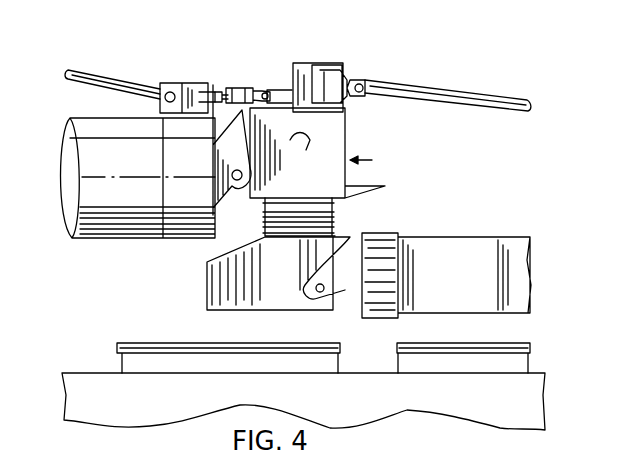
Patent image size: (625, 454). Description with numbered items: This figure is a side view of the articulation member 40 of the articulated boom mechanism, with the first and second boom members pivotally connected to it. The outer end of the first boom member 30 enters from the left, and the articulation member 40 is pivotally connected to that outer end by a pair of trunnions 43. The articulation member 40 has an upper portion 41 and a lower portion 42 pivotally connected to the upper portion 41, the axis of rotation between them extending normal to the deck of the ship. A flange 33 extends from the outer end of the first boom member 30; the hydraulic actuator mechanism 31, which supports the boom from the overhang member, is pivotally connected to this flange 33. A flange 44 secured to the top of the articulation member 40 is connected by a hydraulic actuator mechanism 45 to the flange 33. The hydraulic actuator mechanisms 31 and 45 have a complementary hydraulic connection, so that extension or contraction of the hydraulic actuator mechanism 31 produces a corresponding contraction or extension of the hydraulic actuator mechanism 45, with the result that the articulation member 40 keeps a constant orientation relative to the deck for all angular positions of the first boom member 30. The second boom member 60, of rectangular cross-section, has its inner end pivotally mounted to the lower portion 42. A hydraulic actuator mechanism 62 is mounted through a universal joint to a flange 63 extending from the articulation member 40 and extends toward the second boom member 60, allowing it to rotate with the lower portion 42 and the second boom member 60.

The first boom member 30 is at (110, 238).
The hydraulic actuator mechanism 31 is at (103, 74).
The flange 33 is at (189, 88).
The articulation member 40 is at (371, 161).
The upper portion 41 is at (326, 135).
The lower portion 42 is at (209, 292).
The pair of trunnions 43 is at (246, 225).
The flange 44 is at (278, 88).
The hydraulic actuator mechanism 45 is at (236, 87).
The second boom member 60 is at (443, 246).
The hydraulic actuator mechanism 62 is at (428, 84).
The flange 63 is at (334, 62).